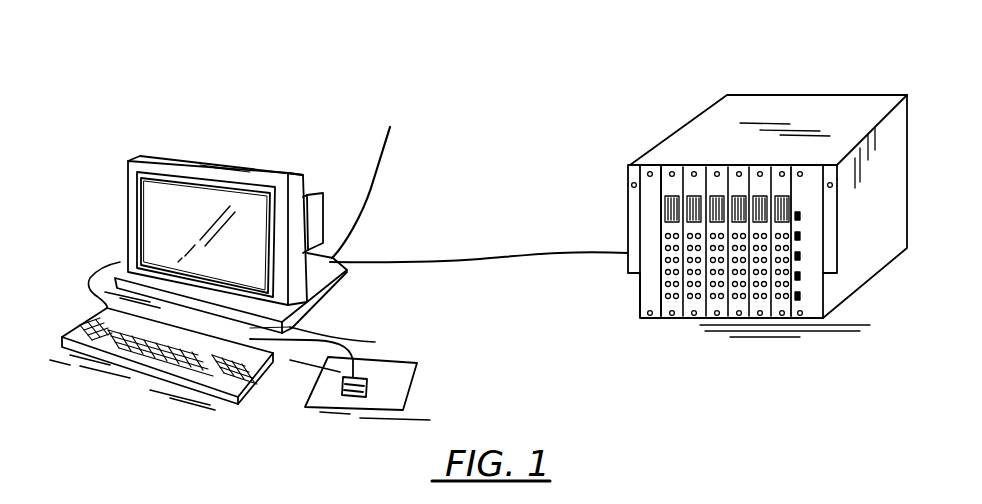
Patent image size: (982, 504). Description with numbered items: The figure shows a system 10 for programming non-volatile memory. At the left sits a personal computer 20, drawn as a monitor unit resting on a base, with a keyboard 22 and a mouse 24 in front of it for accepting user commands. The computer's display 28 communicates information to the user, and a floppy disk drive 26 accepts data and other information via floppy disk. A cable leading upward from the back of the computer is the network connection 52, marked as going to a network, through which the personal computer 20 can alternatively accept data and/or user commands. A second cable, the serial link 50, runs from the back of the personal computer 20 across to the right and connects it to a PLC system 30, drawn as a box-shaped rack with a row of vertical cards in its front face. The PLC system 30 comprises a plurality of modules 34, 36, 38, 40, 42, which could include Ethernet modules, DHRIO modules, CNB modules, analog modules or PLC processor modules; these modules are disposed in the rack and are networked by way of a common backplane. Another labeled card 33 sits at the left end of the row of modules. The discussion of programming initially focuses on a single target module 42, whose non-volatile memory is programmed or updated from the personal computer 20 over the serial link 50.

The system for programming non-volatile memory 10 is at (147, 100).
The personal computer 20 is at (228, 162).
The keyboard 22 is at (187, 370).
The mouse 24 is at (368, 384).
The floppy disk drive 26 is at (307, 313).
The display 28 is at (195, 238).
The PLC system 30 is at (707, 125).
The port card 33 is at (667, 320).
The module 34 is at (687, 320).
The module 36 is at (707, 320).
The module 38 is at (742, 321).
The module 40 is at (762, 320).
The target module 42 is at (787, 322).
The RS-232 link 50 is at (474, 260).
The network connection 52 is at (387, 153).